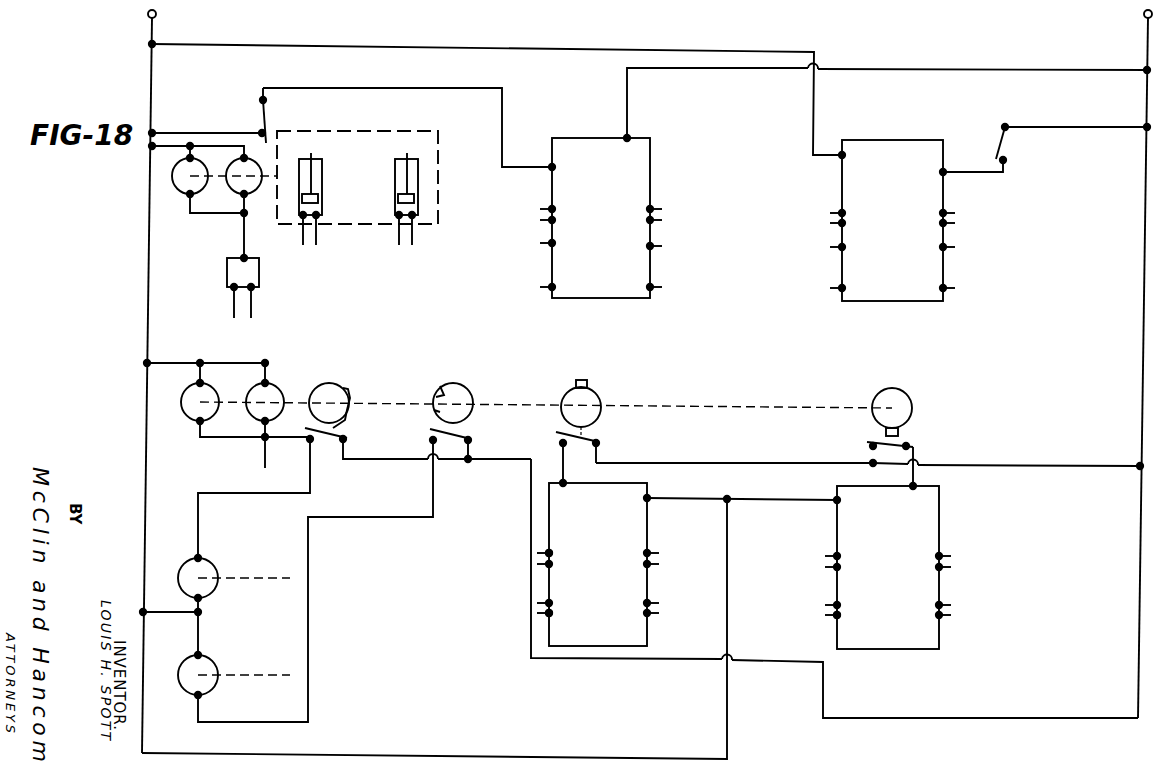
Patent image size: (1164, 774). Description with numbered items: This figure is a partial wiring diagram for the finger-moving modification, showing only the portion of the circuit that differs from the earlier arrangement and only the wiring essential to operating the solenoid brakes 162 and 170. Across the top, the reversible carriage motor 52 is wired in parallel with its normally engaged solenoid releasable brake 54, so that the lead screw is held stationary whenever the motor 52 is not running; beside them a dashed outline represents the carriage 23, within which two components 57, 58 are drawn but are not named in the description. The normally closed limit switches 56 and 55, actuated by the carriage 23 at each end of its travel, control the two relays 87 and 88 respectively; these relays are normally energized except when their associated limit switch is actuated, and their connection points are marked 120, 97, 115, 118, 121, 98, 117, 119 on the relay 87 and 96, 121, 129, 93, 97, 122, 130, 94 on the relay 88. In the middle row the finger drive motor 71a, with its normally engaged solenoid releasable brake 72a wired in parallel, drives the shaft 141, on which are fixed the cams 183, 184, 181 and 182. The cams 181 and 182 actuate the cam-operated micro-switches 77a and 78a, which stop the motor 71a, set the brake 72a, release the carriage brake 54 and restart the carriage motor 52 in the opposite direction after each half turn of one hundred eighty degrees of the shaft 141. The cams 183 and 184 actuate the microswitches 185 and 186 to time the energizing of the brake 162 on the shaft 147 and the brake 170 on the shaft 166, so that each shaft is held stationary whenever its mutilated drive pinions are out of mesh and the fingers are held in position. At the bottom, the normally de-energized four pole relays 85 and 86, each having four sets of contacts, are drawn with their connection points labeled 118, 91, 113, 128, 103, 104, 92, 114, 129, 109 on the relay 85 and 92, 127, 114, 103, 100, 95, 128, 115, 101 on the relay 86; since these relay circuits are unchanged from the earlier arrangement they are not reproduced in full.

The carriage 23 is at (440, 130).
The reversible motor 52 is at (235, 188).
The solenoid releasable brake 54 is at (183, 182).
The limit switch 55 is at (1004, 148).
The limit switch 56 is at (268, 118).
The solenoid 57 is at (323, 176).
The solenoid 58 is at (395, 184).
The motor 71a is at (273, 388).
The solenoid releasable brake 72a is at (192, 412).
The cam-operated micro-switch 77a is at (580, 448).
The cam-operated micro-switch 78a is at (900, 440).
The four pole relay 85 is at (598, 564).
The four pole relay 86 is at (888, 567).
The relay 87 is at (662, 149).
The relay 88 is at (950, 118).
The terminal 91 is at (520, 548).
The terminal 92 is at (659, 552).
The terminal 93 is at (830, 290).
The terminal 94 is at (955, 289).
The terminal 95 is at (951, 554).
The terminal 96 is at (830, 210).
The terminal 97 is at (540, 222).
The terminal 98 is at (662, 221).
The terminal 100 is at (812, 628).
The terminal 101 is at (951, 616).
The terminal 103 is at (537, 613).
The terminal 104 is at (519, 627).
The terminal 109 is at (659, 614).
The terminal 113 is at (537, 564).
The terminal 114 is at (659, 565).
The terminal 115 is at (540, 245).
The terminal 117 is at (662, 247).
The terminal 118 is at (540, 289).
The terminal 119 is at (662, 288).
The terminal 120 is at (540, 206).
The terminal 121 is at (662, 207).
The terminal 122 is at (955, 224).
The terminal 127 is at (825, 569).
The terminal 128 is at (537, 603).
The terminal 129 is at (830, 249).
The terminal 130 is at (955, 248).
The shaft 141 is at (540, 381).
The shaft 147 is at (268, 570).
The solenoid releasable brake 162 is at (207, 560).
The shaft 166 is at (272, 668).
The solenoid releasable brake 170 is at (207, 658).
The cam 181 is at (587, 384).
The cam 182 is at (896, 392).
The cam 183 is at (331, 383).
The cam 184 is at (455, 383).
The microswitch 185 is at (350, 435).
The microswitch 186 is at (472, 435).